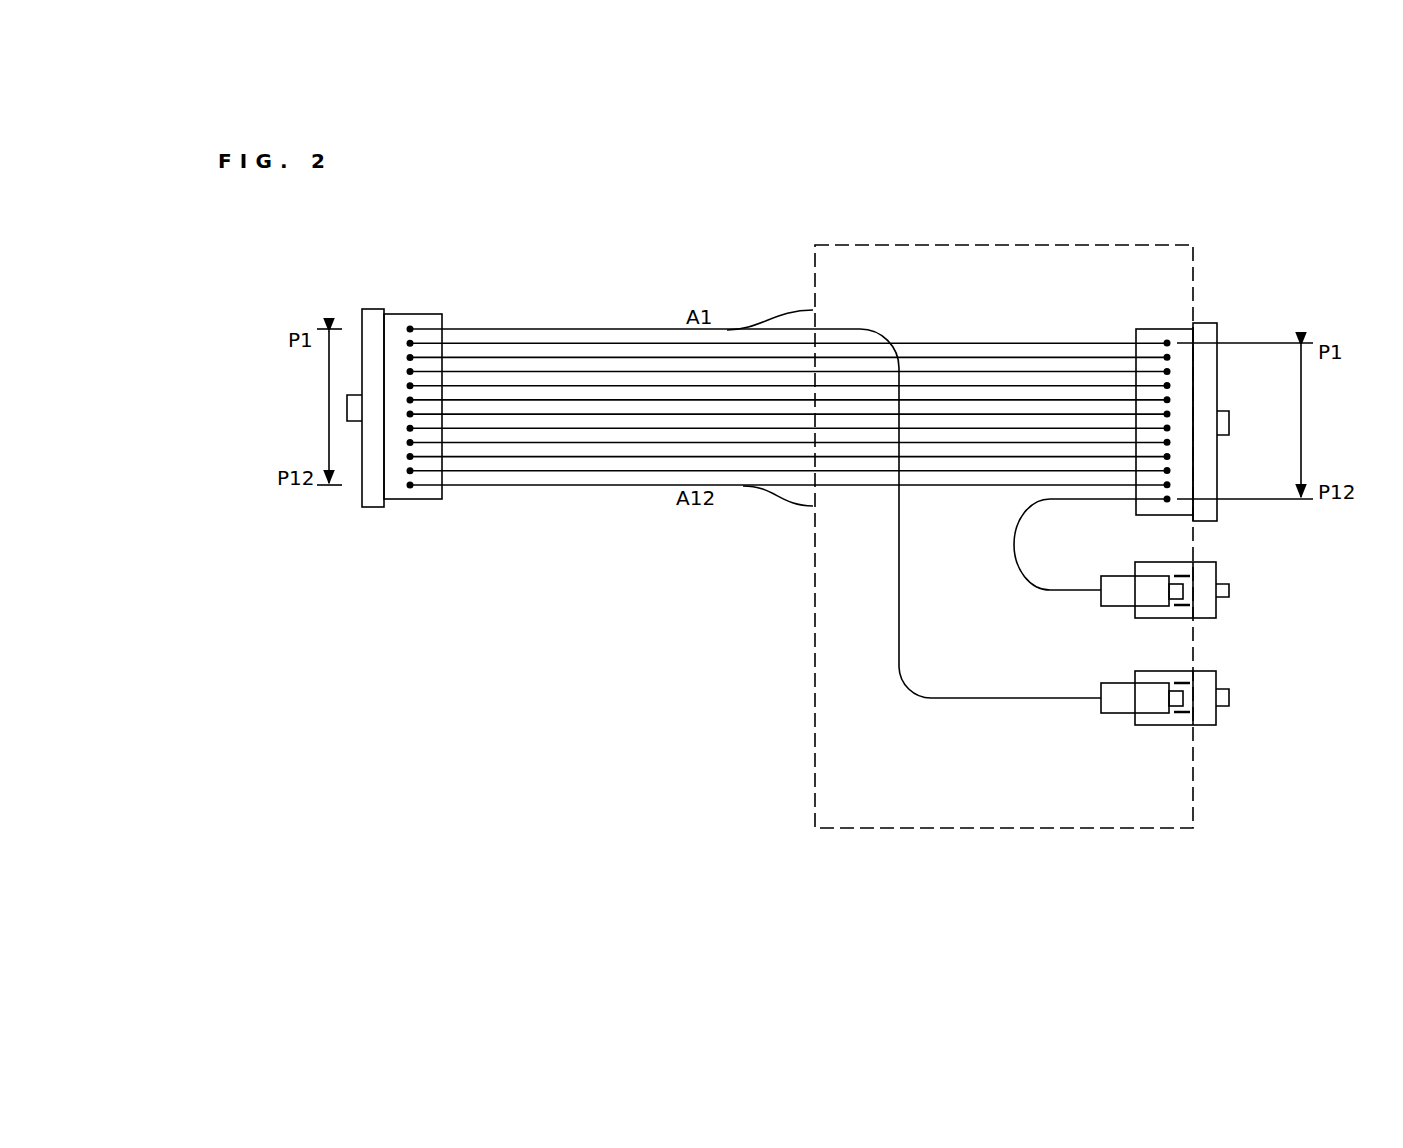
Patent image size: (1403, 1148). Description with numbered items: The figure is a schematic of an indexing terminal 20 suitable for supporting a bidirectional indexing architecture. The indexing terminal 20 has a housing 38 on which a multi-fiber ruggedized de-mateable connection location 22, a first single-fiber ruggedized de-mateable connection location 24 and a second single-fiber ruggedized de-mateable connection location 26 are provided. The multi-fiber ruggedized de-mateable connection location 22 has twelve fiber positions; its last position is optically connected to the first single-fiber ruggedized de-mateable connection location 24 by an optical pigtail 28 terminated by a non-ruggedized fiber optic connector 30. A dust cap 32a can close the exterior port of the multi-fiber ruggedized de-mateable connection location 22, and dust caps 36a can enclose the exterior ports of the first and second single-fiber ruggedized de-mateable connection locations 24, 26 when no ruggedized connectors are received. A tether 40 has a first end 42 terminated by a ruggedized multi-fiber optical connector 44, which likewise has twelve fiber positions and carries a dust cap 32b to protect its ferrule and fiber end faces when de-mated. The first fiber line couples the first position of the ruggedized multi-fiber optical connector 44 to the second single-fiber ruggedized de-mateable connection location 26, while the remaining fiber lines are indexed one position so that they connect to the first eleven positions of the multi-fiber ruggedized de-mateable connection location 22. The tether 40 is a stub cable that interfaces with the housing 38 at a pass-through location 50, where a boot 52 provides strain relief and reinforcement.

The indexing terminal 20 is at (608, 190).
The multi-fiber ruggedized de-mateable connection location 22 is at (1172, 328).
The first single-fiber ruggedized de-mateable connection location 24 is at (1160, 606).
The second single-fiber ruggedized de-mateable connection location 26 is at (1165, 725).
The optical pigtail 28 is at (1050, 590).
The non-ruggedized fiber optic connector 30 is at (1115, 576).
The dust cap 32a is at (1220, 408).
The dust cap 32b is at (360, 322).
The dust caps 36a is at (1216, 570).
The housing 38 is at (955, 828).
The tether 40 is at (512, 489).
The first end 42 is at (407, 520).
The ruggedized multi-fiber optical connector 44 is at (412, 313).
The pass-through location 50 is at (787, 308).
The boot 52 is at (770, 498).